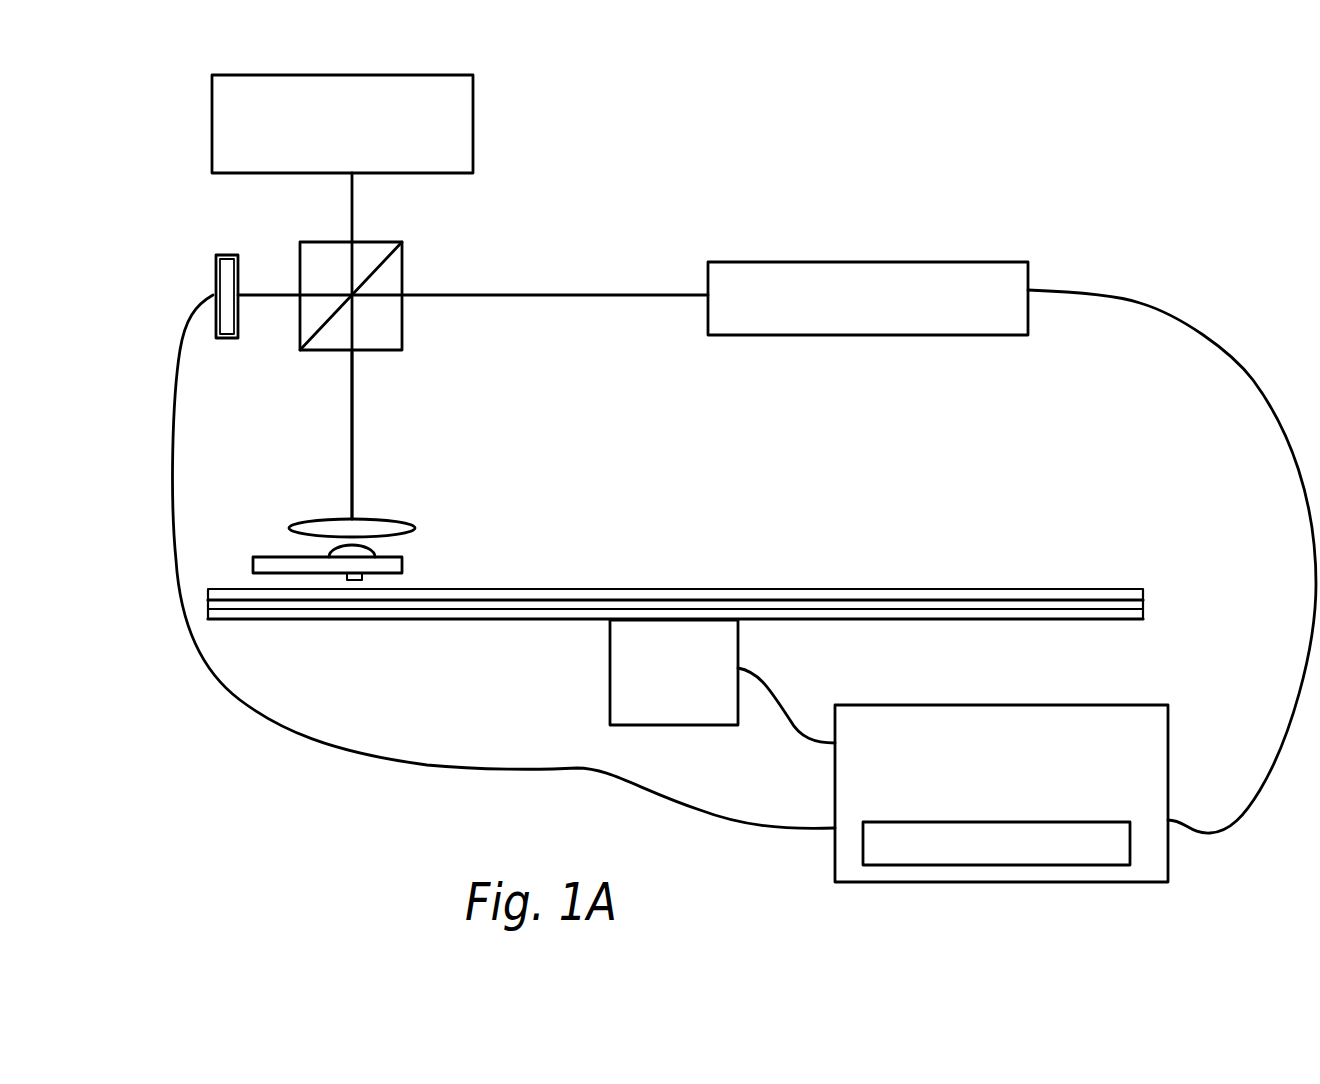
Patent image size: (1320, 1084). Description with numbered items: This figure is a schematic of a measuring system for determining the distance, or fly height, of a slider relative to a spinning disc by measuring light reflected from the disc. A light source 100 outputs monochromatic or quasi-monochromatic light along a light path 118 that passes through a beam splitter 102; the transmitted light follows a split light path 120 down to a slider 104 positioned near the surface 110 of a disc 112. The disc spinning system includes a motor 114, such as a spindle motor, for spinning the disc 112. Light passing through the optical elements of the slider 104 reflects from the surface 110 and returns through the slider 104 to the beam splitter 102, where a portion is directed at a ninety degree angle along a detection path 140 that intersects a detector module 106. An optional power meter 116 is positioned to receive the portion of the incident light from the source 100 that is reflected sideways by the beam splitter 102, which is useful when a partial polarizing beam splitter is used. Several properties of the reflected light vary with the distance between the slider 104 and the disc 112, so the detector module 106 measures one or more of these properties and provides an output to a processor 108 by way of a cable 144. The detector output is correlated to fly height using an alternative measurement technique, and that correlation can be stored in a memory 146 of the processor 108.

The light source 100 is at (473, 128).
The beam splitter 102 is at (402, 265).
The slider 104 is at (402, 565).
The detector module 106 is at (882, 268).
The processor 108 is at (1160, 858).
The surface 110 is at (930, 587).
The disc 112 is at (1143, 600).
The motor 114 is at (610, 674).
The power meter 116 is at (222, 255).
The light path 118 is at (352, 196).
The split light path 120 is at (354, 402).
The detection path 140 is at (532, 297).
The cable 144 is at (1140, 303).
The memory 146 is at (970, 848).